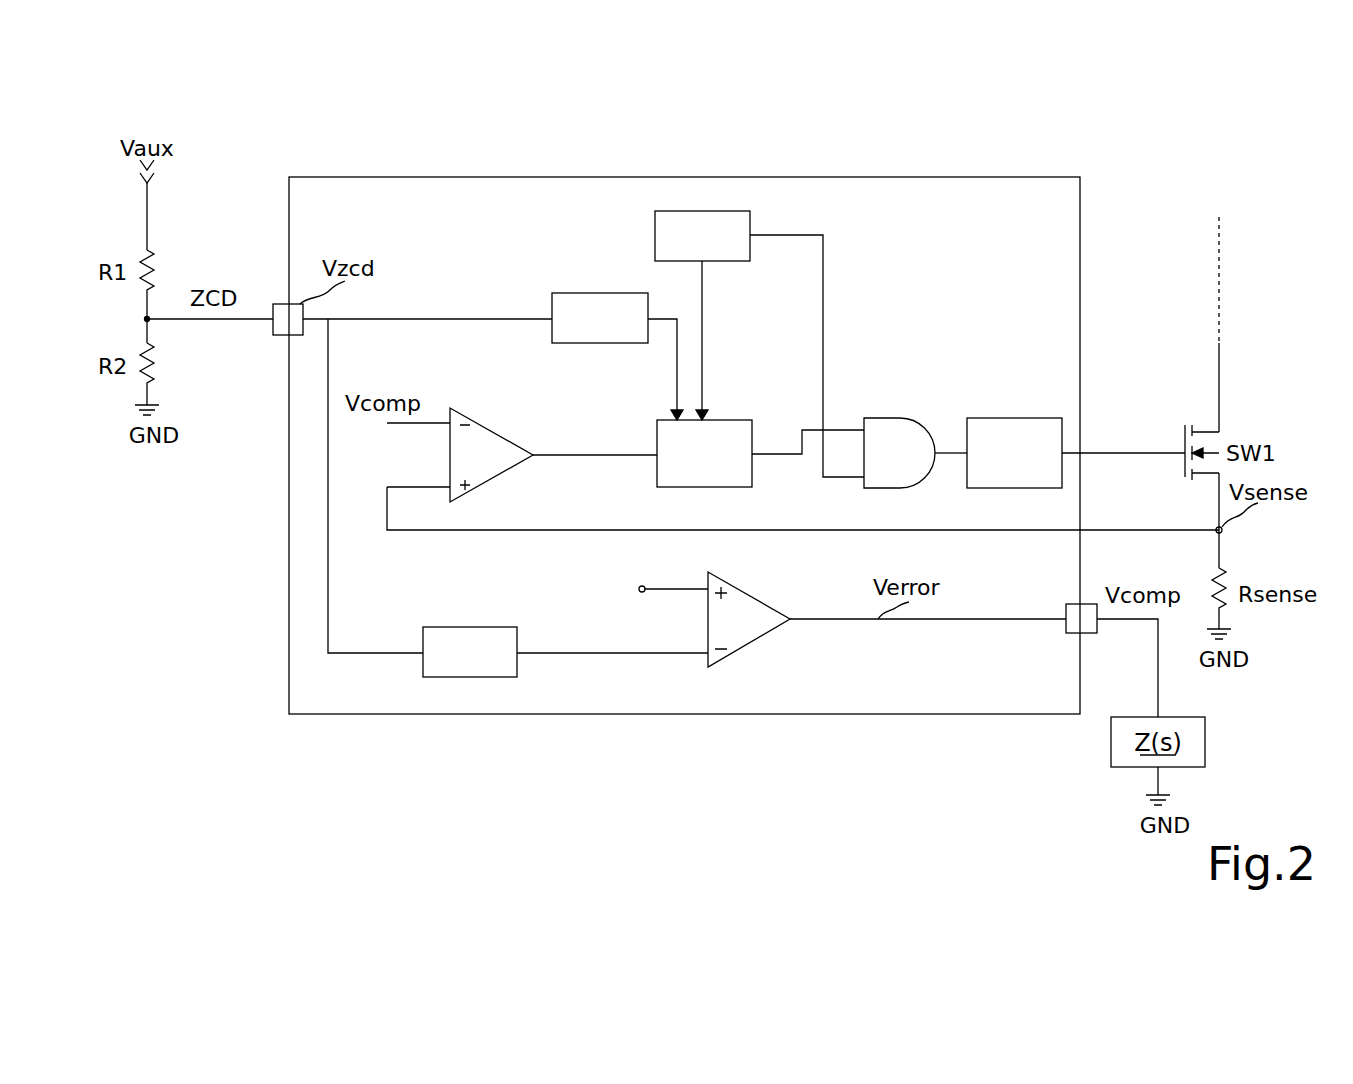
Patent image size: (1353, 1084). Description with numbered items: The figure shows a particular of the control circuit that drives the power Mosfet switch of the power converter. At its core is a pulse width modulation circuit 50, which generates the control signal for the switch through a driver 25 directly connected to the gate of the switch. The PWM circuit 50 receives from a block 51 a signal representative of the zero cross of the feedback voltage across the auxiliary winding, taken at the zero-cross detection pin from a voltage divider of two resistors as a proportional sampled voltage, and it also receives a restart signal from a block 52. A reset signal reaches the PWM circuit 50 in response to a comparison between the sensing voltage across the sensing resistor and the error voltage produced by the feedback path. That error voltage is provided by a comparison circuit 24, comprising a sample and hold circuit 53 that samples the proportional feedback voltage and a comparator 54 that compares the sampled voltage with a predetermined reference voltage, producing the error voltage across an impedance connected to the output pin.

The block 51 is at (586, 330).
The block 52 is at (688, 248).
The pulse width modulation (PWM) circuit 50 is at (690, 466).
The driver 25 is at (1000, 466).
The sample and hold circuit 53 is at (456, 665).
The comparator 54 is at (760, 656).
The comparison circuit 24 is at (709, 623).